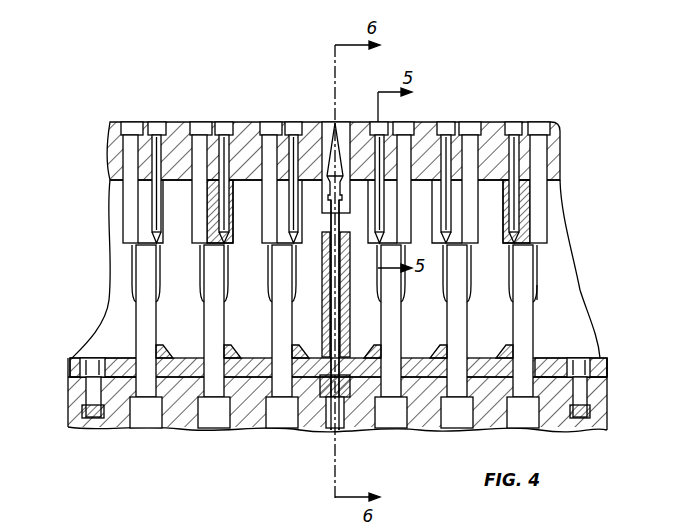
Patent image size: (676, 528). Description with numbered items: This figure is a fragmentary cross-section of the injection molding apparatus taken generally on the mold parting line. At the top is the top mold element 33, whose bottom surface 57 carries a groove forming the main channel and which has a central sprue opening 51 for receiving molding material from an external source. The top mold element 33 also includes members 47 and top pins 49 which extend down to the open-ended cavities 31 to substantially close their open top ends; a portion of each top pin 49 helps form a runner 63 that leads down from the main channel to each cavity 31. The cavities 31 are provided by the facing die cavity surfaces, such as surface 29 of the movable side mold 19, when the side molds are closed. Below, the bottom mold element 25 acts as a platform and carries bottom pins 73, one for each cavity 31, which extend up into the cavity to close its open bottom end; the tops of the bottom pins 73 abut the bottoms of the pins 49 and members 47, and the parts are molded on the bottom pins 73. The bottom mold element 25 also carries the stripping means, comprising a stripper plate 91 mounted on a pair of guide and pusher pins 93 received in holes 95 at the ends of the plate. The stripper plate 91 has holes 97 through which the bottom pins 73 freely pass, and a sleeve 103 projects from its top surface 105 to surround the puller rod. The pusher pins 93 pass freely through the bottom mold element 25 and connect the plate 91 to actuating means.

The movable side mold 19 is at (567, 270).
The bottom mold element 25 is at (176, 426).
The die cavity surface 29 is at (566, 316).
The open-ended cavity 31 is at (538, 292).
The top mold element 33 is at (112, 158).
The member 47 is at (266, 150).
The top pin 49 is at (227, 150).
The central sprue opening 51 is at (338, 128).
The bottom surface 57 is at (112, 183).
The runner 63 is at (218, 213).
The bottom pin 73 is at (137, 316).
The stripper plate 91 is at (124, 357).
The guide and pusher pin 93 is at (82, 397).
The hole 95 is at (86, 385).
The hole 97 is at (212, 358).
The sleeve 103 is at (348, 340).
The top surface 105 is at (258, 360).